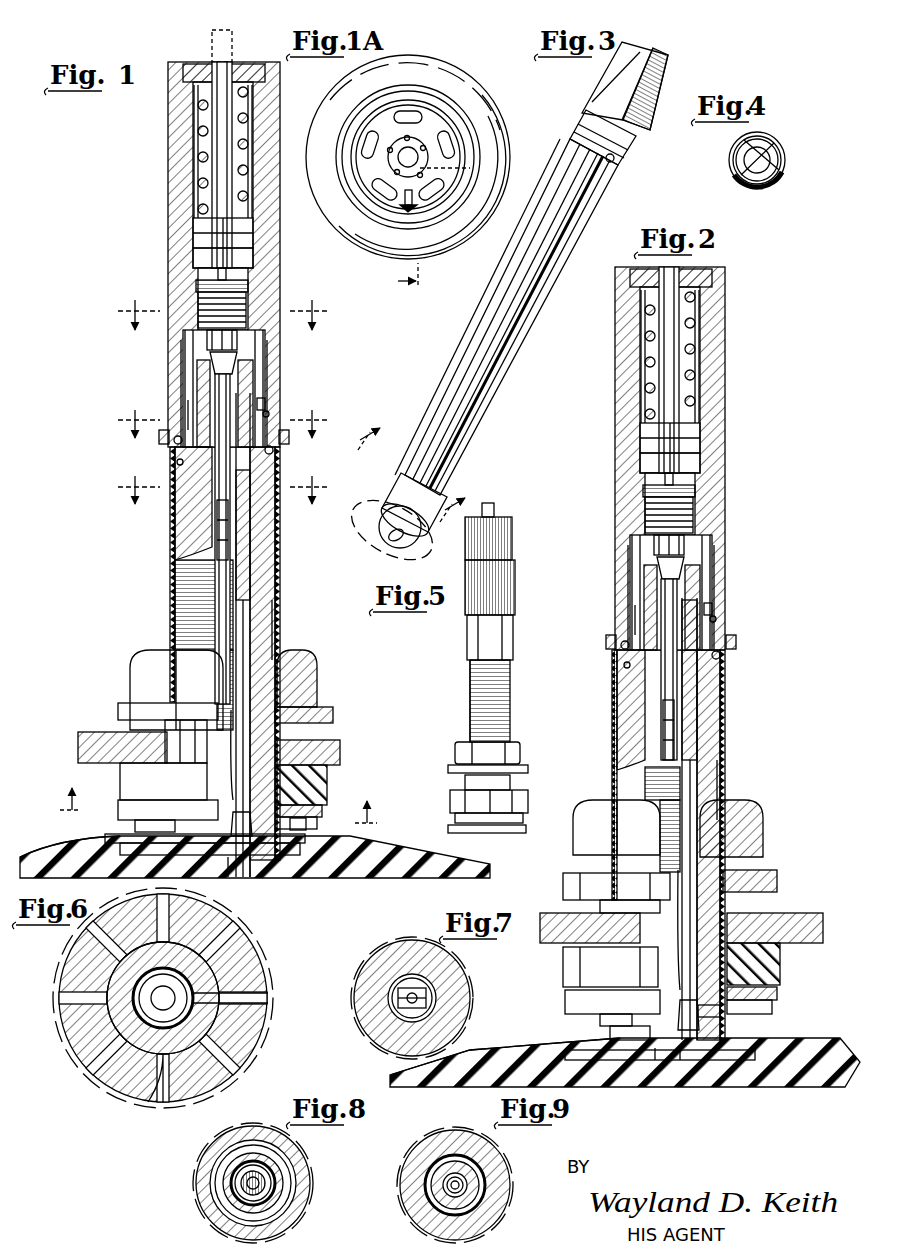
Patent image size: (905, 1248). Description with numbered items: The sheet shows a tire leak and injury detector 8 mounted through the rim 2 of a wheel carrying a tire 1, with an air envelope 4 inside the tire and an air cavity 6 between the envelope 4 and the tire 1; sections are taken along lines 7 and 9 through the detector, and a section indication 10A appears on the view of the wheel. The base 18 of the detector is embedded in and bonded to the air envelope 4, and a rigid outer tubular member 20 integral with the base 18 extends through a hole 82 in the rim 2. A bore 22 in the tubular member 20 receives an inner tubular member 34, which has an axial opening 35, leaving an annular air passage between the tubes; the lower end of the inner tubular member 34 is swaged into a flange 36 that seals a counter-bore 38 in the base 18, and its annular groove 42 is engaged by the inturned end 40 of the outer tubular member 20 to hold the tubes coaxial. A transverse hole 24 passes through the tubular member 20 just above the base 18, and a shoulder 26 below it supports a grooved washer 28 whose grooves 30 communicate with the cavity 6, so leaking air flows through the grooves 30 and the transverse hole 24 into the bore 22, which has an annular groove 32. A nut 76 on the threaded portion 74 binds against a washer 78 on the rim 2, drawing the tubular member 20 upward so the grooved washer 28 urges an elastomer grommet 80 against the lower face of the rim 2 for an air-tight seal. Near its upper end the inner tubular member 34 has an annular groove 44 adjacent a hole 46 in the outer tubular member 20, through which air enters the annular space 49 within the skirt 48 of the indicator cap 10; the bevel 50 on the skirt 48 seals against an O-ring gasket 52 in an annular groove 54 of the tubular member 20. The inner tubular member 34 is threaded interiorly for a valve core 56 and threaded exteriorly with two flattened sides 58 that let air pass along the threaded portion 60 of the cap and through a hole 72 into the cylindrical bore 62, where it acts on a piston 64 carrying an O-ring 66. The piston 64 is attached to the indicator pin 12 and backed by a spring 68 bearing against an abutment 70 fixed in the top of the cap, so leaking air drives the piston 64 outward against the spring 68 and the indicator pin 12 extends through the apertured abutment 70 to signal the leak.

In FIG. 1A, the tire 1 is at (505, 122).
In FIG. 1, the rim 2 is at (345, 720).
In FIG. 1A, the rim 2 is at (425, 128).
In FIG. 2, the rim 2 is at (820, 932).
In FIG. 1, the air envelope 4 is at (60, 846).
In FIG. 3, the air envelope 4 is at (415, 474).
In FIG. 2, the air envelope 4 is at (515, 1048).
In FIG. 1, the air cavity 6 is at (108, 765).
In FIG. 2, the air cavity 6 is at (795, 940).
In FIG. 1, the section line 7— 7 is at (221, 315).
In FIG. 1, the tire leak and injury detector 8 is at (175, 604).
In FIG. 1A, the tire leak and injury detector 8 is at (402, 208).
In FIG. 2, the tire leak and injury detector 8 is at (720, 675).
In FIG. 5, the tire leak and injury detector 8 is at (513, 707).
In FIG. 1, the section line 9— 9 is at (221, 490).
In FIG. 1, the indicator cap 10 is at (167, 171).
In FIG. 2, the indicator cap 10 is at (614, 433).
In FIG. 5, the indicator cap 10 is at (510, 570).
In FIG. 1A, the section line 10A- 10A is at (472, 178).
In FIG. 1, the indicator pin 12 is at (212, 45).
In FIG. 2, the indicator pin 12 is at (676, 316).
In FIG. 5, the indicator pin 12 is at (496, 512).
In FIG. 1, the base 18 is at (302, 855).
In FIG. 2, the base 18 is at (763, 1055).
In FIG. 5, the base 18 is at (523, 830).
In FIG. 1, the outer tubular member 20 is at (270, 591).
In FIG. 2, the outer tubular member 20 is at (720, 750).
In FIG. 5, the outer tubular member 20 is at (470, 691).
In FIG. 9, the outer tubular member 20 is at (483, 1197).
In FIG. 1, the bore 22 is at (244, 620).
In FIG. 2, the bore 22 is at (690, 718).
In FIG. 6, the bore 22 is at (140, 998).
In FIG. 8, the bore 22 is at (270, 1170).
In FIG. 9, the bore 22 is at (443, 1182).
In FIG. 1, the transverse hole 24 is at (303, 818).
In FIG. 2, the transverse hole 24 is at (731, 1018).
In FIG. 6, the transverse hole 24 is at (243, 996).
In FIG. 1, the shoulder 26 is at (298, 836).
In FIG. 2, the shoulder 26 is at (610, 1032).
In FIG. 1, the grooved washer 28 is at (127, 810).
In FIG. 2, the grooved washer 28 is at (773, 996).
In FIG. 5, the grooved washer 28 is at (528, 813).
In FIG. 6, the grooved washer 28 is at (240, 985).
In FIG. 1, the grooves 30 is at (318, 812).
In FIG. 2, the grooves 30 is at (768, 1013).
In FIG. 5, the grooves 30 is at (455, 820).
In FIG. 6, the grooves 30 is at (61, 988).
In FIG. 1, the annular groove 32 is at (235, 830).
In FIG. 3, the annular groove 32 is at (433, 495).
In FIG. 4, the annular groove 32 is at (779, 154).
In FIG. 2, the annular groove 32 is at (678, 1025).
In FIG. 6, the annular groove 32 is at (160, 1005).
In FIG. 1, the inner tubular member 34 is at (248, 543).
In FIG. 3, the inner tubular member 34 is at (506, 348).
In FIG. 4, the inner tubular member 34 is at (740, 161).
In FIG. 2, the inner tubular member 34 is at (670, 724).
In FIG. 6, the inner tubular member 34 is at (163, 1103).
In FIG. 8, the inner tubular member 34 is at (265, 1186).
In FIG. 9, the inner tubular member 34 is at (468, 1182).
In FIG. 1, the axial opening 35 is at (226, 522).
In FIG. 3, the axial opening 35 is at (388, 534).
In FIG. 4, the axial opening 35 is at (763, 160).
In FIG. 2, the axial opening 35 is at (664, 740).
In FIG. 6, the axial opening 35 is at (163, 973).
In FIG. 9, the axial opening 35 is at (438, 1163).
In FIG. 1, the flange 36 is at (242, 870).
In FIG. 3, the flange 36 is at (422, 546).
In FIG. 2, the flange 36 is at (648, 1067).
In FIG. 1, the counter-bore 38 is at (267, 870).
In FIG. 2, the counter-bore 38 is at (680, 1067).
In FIG. 1, the inturned upper end 40 is at (213, 372).
In FIG. 2, the inturned upper end 40 is at (683, 583).
In FIG. 1, the annular groove 42 is at (262, 400).
In FIG. 3, the annular groove 42 is at (620, 135).
In FIG. 2, the annular groove 42 is at (711, 610).
In FIG. 1, the annular groove 44 is at (188, 412).
In FIG. 3, the annular groove 44 is at (615, 163).
In FIG. 2, the annular groove 44 is at (635, 635).
In FIG. 8, the annular groove 44 is at (230, 1180).
In FIG. 1, the hole 46 is at (268, 415).
In FIG. 2, the hole 46 is at (715, 620).
In FIG. 8, the hole 46 is at (280, 1180).
In FIG. 1, the skirt 48 is at (224, 393).
In FIG. 2, the skirt 48 is at (713, 552).
In FIG. 8, the skirt 48 is at (223, 1148).
In FIG. 1, the annular space 49 is at (260, 338).
In FIG. 2, the annular space 49 is at (710, 541).
In FIG. 1, the bevel 50 is at (170, 444).
In FIG. 2, the bevel 50 is at (622, 645).
In FIG. 1, the O-ring gasket 52 is at (271, 447).
In FIG. 2, the O-ring gasket 52 is at (620, 647).
In FIG. 1, the annular groove 54 is at (177, 462).
In FIG. 2, the annular groove 54 is at (625, 664).
In FIG. 1, the valve core 56 is at (207, 335).
In FIG. 2, the valve core 56 is at (654, 540).
In FIG. 7, the valve core 56 is at (393, 998).
In FIG. 8, the valve core 56 is at (260, 1187).
In FIG. 9, the valve core 56 is at (448, 1186).
In FIG. 3, the flattened sides 58 is at (635, 57).
In FIG. 7, the flattened sides 58 is at (412, 980).
In FIG. 1, the threaded portion 60 is at (205, 298).
In FIG. 2, the threaded portion 60 is at (645, 510).
In FIG. 1, the cylindrical bore 62 is at (203, 170).
In FIG. 2, the cylindrical bore 62 is at (695, 380).
In FIG. 1, the piston 64 is at (253, 254).
In FIG. 2, the piston 64 is at (700, 463).
In FIG. 1, the O-ring 66 is at (253, 247).
In FIG. 2, the O-ring 66 is at (700, 442).
In FIG. 1, the spring 68 is at (248, 102).
In FIG. 2, the spring 68 is at (693, 322).
In FIG. 1, the abutment 70 is at (238, 76).
In FIG. 2, the abutment 70 is at (708, 285).
In FIG. 1, the hole 72 is at (218, 280).
In FIG. 2, the hole 72 is at (673, 481).
In FIG. 1, the threaded portion 74 is at (274, 641).
In FIG. 2, the threaded portion 74 is at (718, 787).
In FIG. 1, the nut 76 is at (313, 682).
In FIG. 2, the nut 76 is at (763, 827).
In FIG. 5, the nut 76 is at (520, 755).
In FIG. 1, the washer 78 is at (306, 722).
In FIG. 2, the washer 78 is at (758, 885).
In FIG. 5, the washer 78 is at (528, 769).
In FIG. 1, the elastomer grommet 80 is at (333, 760).
In FIG. 2, the elastomer grommet 80 is at (778, 967).
In FIG. 5, the elastomer grommet 80 is at (511, 783).
In FIG. 1, the hole 82 is at (178, 746).
In FIG. 2, the hole 82 is at (613, 928).